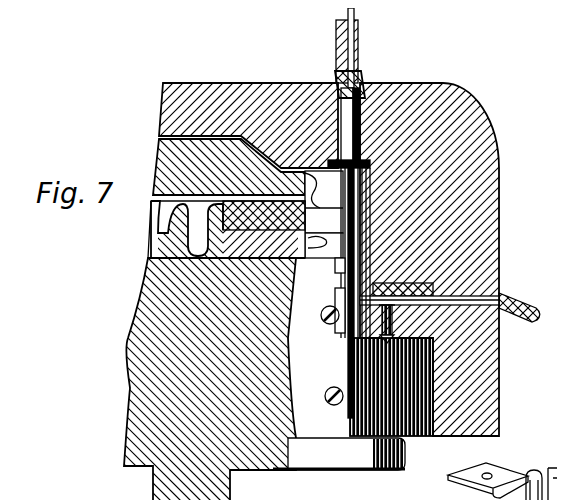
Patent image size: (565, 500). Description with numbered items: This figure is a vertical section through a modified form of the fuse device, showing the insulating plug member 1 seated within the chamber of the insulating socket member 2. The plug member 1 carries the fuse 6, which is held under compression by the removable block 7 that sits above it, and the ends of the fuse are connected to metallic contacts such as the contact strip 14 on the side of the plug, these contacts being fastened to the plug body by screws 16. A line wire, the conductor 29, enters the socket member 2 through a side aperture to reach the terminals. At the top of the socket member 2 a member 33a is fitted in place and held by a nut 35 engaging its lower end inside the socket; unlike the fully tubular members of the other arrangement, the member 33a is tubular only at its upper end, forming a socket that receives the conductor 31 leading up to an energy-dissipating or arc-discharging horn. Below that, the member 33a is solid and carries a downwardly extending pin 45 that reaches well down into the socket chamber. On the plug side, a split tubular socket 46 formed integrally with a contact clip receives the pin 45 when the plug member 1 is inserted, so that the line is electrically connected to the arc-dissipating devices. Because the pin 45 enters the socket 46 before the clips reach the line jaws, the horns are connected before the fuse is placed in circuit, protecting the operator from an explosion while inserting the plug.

The plug member 1 is at (294, 452).
The socket member 2 is at (482, 206).
The fuse 6 is at (150, 237).
The removable block 7 is at (210, 158).
The metallic contact 14 is at (320, 420).
The screws 16 is at (318, 304).
The conductor 29 is at (493, 290).
The conductor 31 is at (352, 18).
The member 33a is at (360, 80).
The nut 35 is at (362, 156).
The pin 45 is at (345, 225).
The socket 46 is at (334, 268).